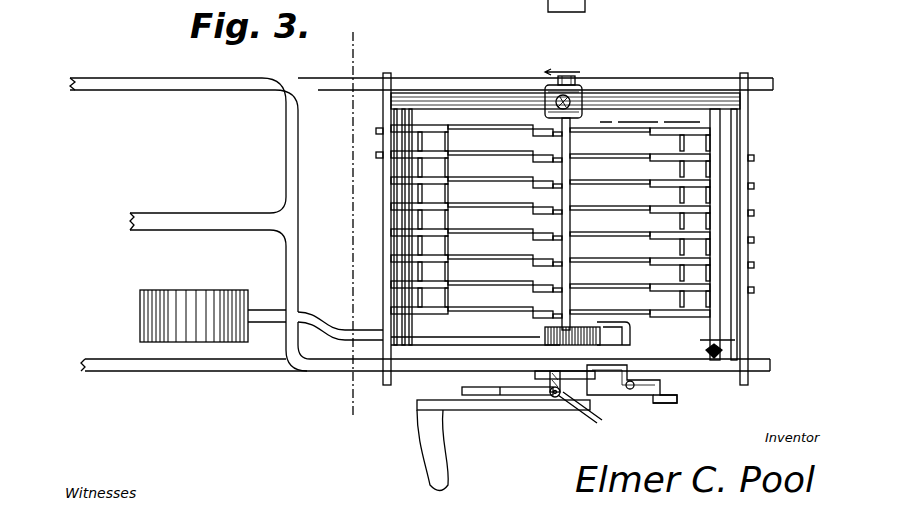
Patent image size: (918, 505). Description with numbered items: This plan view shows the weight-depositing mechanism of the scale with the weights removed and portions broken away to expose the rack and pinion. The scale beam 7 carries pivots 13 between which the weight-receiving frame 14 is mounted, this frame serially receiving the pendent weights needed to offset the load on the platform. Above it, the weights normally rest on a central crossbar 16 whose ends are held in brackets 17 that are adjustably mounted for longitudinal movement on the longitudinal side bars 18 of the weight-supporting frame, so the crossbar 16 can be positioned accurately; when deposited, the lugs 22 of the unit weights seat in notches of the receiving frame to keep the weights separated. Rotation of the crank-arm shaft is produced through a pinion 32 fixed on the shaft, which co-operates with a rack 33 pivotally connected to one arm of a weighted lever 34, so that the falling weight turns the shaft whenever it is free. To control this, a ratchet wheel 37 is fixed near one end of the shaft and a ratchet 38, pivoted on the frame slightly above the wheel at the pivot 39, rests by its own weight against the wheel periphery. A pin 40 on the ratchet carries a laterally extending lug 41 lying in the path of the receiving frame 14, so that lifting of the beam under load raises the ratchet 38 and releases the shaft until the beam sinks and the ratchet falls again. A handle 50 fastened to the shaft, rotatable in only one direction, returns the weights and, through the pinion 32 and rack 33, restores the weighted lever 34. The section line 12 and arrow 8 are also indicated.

The scale beam 7 is at (212, 213).
The pulley block / arrow 8 is at (563, 63).
The section line 12 is at (342, 57).
The pivots 13 is at (567, 78).
The weight-receiving frame 14 is at (398, 300).
The central crossbar 16 is at (570, 148).
The brackets 17 is at (580, 84).
The longitudinal side bars 18 is at (645, 100).
The lugs 22 is at (376, 131).
The pinion 32 is at (545, 340).
The rack 33 is at (632, 335).
The weighted lever 34 is at (265, 309).
The ratchet wheel 37 is at (478, 394).
The ratchet 38 is at (612, 396).
The ratchet pivot 39 is at (660, 405).
The pin 40 is at (547, 400).
The lug 41 is at (560, 398).
The handle 50 is at (430, 486).